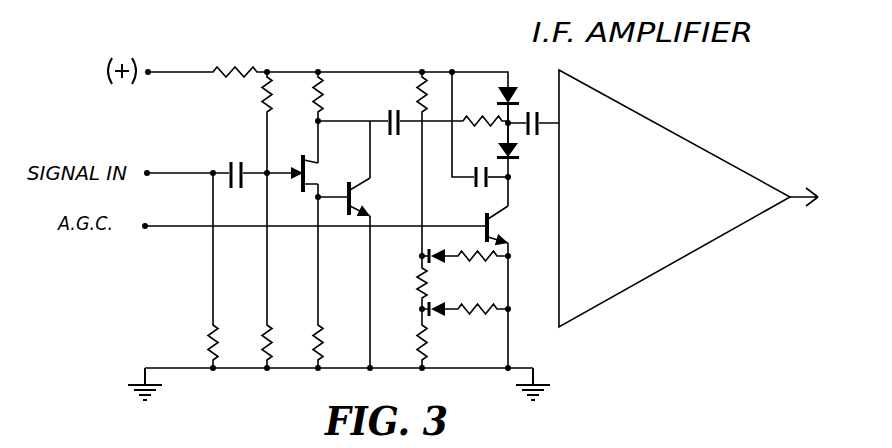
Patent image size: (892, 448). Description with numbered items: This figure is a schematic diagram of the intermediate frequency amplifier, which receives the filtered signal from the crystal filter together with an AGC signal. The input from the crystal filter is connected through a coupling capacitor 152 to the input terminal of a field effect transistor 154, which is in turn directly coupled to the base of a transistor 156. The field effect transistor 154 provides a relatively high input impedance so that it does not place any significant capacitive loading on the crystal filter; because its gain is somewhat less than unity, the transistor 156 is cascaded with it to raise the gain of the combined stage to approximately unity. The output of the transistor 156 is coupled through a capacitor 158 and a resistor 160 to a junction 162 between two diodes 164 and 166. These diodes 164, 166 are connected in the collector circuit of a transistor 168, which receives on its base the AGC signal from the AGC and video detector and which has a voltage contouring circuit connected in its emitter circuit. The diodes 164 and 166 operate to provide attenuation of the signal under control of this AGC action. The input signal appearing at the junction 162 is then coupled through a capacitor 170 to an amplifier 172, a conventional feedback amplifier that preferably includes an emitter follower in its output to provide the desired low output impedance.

The coupling capacitor 152 is at (232, 160).
The field effect transistor 154 is at (311, 160).
The transistor 156 is at (362, 187).
The capacitor 158 is at (391, 110).
The resistor 160 is at (489, 120).
The junction 162 is at (506, 127).
The diode 164 is at (510, 88).
The diode 166 is at (517, 157).
The transistor 168 is at (505, 216).
The capacitor 170 is at (540, 117).
The amplifier 172 is at (691, 137).